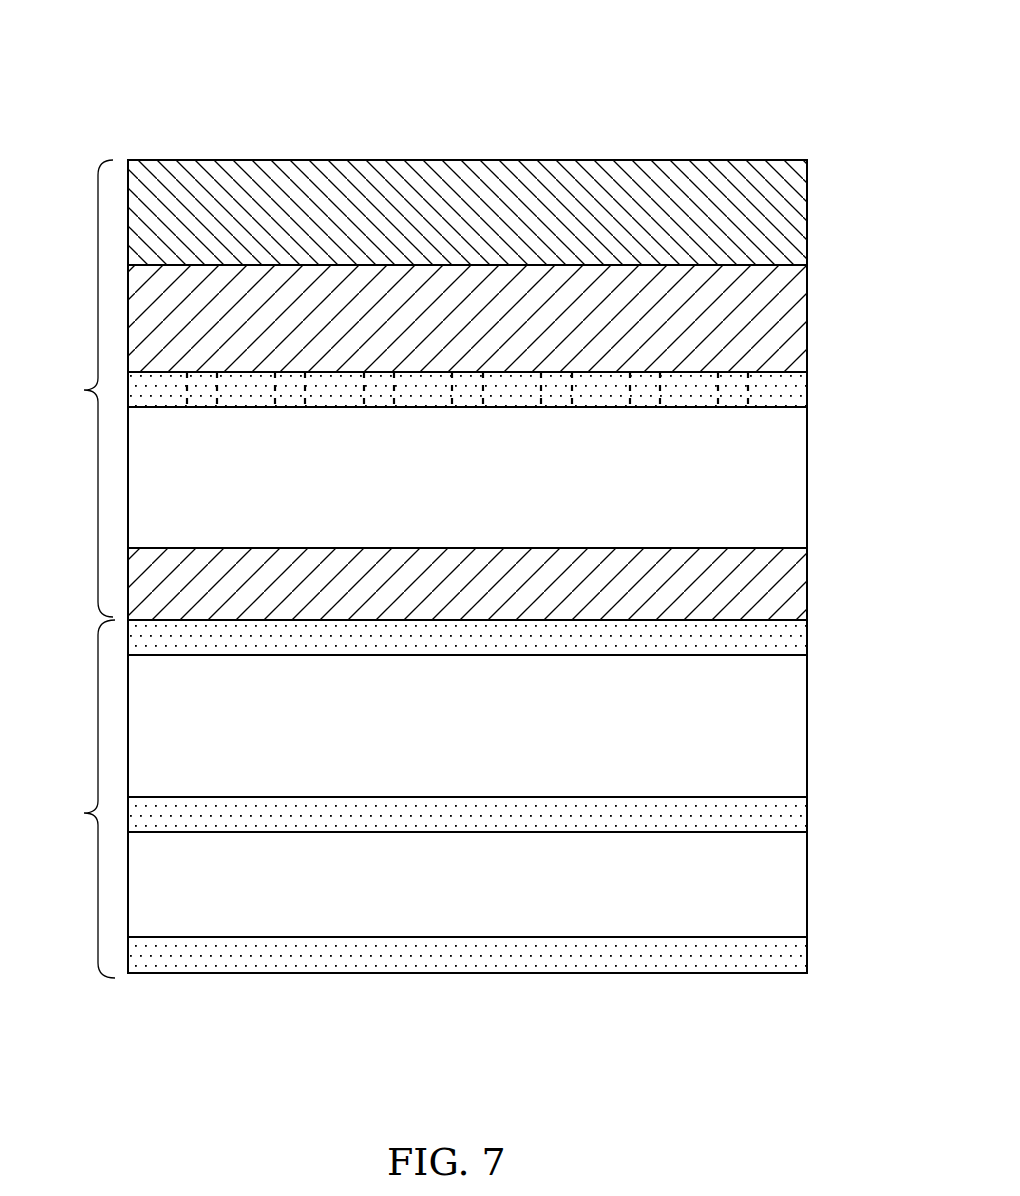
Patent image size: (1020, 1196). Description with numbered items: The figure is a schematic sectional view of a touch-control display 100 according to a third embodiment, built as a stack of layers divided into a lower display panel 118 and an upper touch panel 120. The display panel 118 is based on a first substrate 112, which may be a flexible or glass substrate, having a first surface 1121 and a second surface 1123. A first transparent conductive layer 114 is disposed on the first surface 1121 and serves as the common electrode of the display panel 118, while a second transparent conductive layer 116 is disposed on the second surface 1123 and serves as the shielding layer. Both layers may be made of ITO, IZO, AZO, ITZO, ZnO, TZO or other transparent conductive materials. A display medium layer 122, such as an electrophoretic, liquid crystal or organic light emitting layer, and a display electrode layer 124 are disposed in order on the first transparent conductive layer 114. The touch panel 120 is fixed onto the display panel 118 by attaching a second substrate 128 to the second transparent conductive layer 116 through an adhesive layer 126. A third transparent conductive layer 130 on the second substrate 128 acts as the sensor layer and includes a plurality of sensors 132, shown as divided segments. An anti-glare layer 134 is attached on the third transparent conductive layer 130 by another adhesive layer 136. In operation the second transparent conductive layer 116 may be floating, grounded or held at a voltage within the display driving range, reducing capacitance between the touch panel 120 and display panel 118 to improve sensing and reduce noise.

The touch-control display 100 is at (733, 92).
The display panel 118 is at (73, 799).
The touch panel 120 is at (72, 388).
The first substrate 112 is at (512, 726).
The first surface 1121 is at (788, 796).
The second surface 1123 is at (788, 656).
The first transparent conductive layer 114 is at (793, 815).
The second transparent conductive layer 116 is at (793, 640).
The display medium layer 122 is at (793, 885).
The display electrode layer 124 is at (793, 957).
The adhesive layer 126 is at (793, 588).
The second substrate 128 is at (793, 480).
The third transparent conductive layer 130 is at (508, 430).
The sensors 132 is at (160, 393).
The anti-glare layer 134 is at (793, 210).
The adhesive layer 136 is at (793, 318).